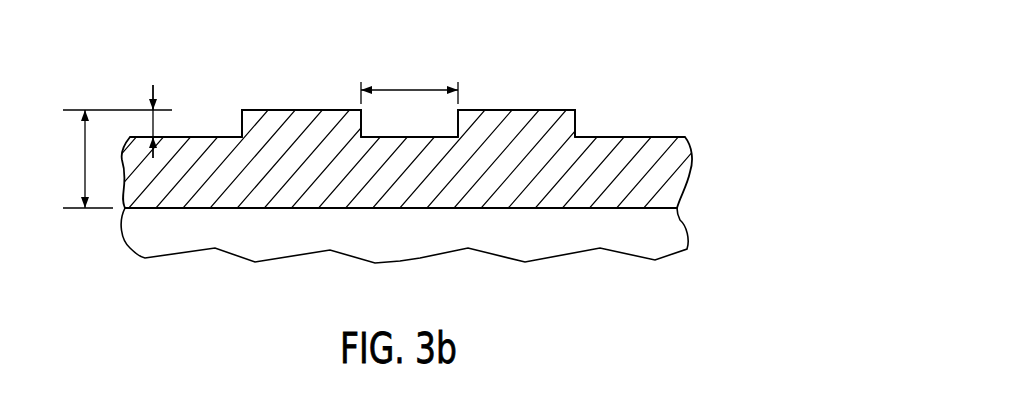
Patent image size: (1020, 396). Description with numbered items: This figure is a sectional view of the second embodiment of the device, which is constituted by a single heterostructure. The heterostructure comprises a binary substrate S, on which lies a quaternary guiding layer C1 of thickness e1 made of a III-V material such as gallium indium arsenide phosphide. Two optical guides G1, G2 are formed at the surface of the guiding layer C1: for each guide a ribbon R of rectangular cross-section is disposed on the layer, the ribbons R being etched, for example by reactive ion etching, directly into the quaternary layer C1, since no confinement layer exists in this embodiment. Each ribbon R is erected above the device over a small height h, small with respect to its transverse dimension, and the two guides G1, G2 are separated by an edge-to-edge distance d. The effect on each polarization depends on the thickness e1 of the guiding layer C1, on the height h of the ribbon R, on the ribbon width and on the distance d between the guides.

The guiding layer C1 is at (670, 178).
The substrate S is at (668, 235).
The guide G1 is at (267, 110).
The guide G2 is at (503, 110).
The ribbon R is at (319, 110).
The thickness of the guiding layer e1 is at (113, 159).
The height of the ribbon h is at (153, 122).
The edge-to-edge distance of the guides d is at (409, 82).